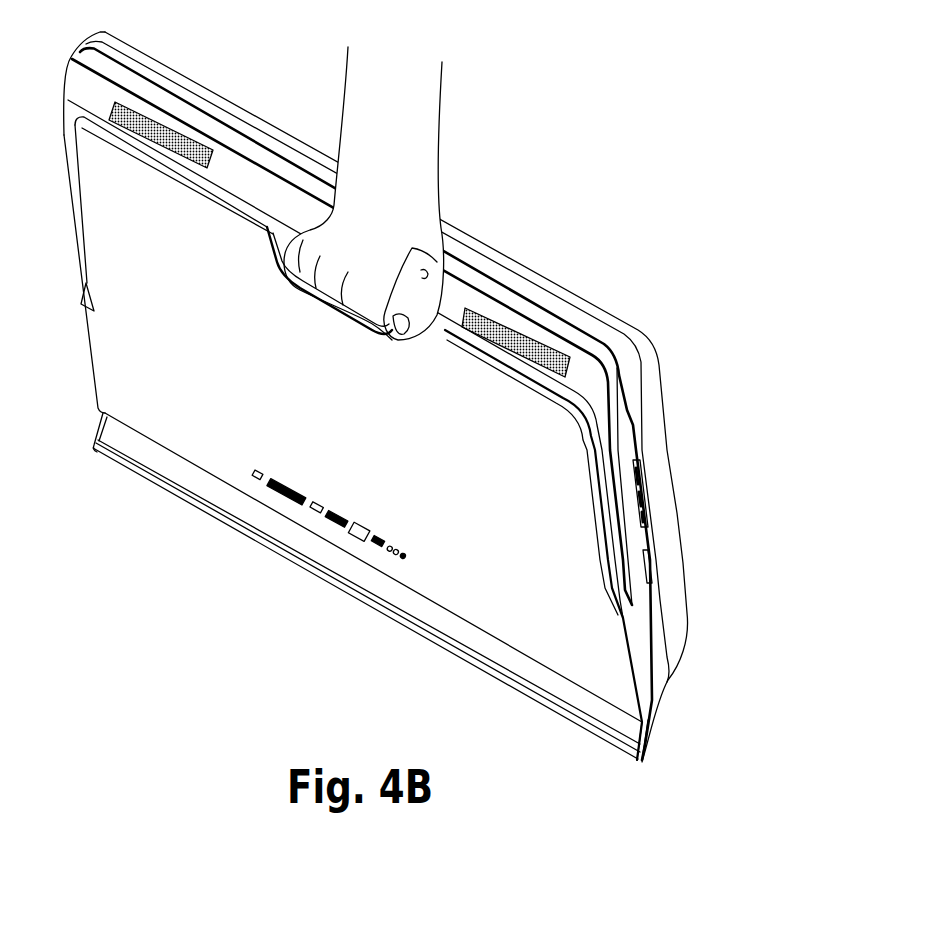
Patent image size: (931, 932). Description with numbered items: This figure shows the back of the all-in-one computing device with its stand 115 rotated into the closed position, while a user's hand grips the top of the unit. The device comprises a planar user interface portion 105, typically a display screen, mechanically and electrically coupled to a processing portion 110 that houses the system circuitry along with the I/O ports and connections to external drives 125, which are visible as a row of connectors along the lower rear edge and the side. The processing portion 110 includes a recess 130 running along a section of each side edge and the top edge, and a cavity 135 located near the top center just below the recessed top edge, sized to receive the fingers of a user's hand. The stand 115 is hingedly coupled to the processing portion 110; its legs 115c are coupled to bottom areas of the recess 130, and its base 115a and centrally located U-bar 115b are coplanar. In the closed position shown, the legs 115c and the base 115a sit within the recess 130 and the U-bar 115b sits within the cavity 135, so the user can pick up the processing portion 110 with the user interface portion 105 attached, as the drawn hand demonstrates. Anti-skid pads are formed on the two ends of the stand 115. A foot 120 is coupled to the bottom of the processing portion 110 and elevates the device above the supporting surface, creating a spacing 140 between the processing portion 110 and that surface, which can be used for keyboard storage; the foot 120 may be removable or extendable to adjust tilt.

The user interface portion 105 is at (683, 610).
The processing portion 110 is at (663, 657).
The stand 115 is at (610, 380).
The base 115a is at (467, 297).
The U-bar 115b is at (265, 247).
The legs 115c is at (613, 465).
The foot 120 is at (650, 752).
The I/O ports and connections to external drives 125 is at (640, 463).
The recess 130 is at (627, 600).
The cavity 135 is at (373, 313).
The spacing 140 is at (177, 470).